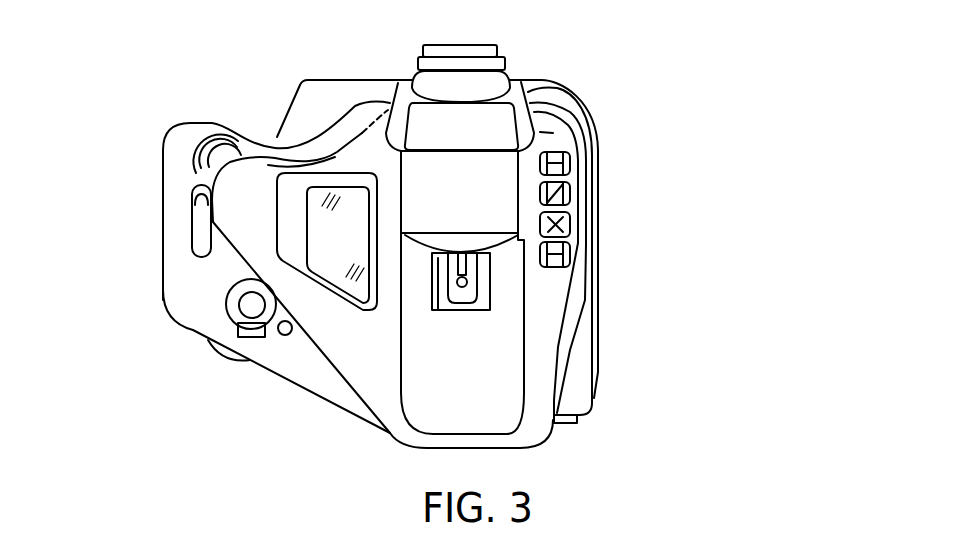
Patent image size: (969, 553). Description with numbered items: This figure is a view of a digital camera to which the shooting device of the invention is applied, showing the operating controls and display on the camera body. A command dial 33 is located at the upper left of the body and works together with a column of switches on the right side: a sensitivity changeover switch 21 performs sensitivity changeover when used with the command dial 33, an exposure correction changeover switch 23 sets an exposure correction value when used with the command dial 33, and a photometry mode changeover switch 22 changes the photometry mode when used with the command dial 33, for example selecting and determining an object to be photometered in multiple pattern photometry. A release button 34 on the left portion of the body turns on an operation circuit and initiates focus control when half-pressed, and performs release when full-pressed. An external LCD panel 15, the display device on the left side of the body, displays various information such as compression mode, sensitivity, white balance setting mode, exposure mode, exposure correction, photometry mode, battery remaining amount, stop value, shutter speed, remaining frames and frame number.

The external LCD panel 15 is at (320, 245).
The sensitivity changeover switch 21 is at (556, 160).
The photometry mode changeover switch 22 is at (566, 227).
The exposure correction changeover switch 23 is at (558, 196).
The command dial 33 is at (226, 162).
The release button 34 is at (250, 305).